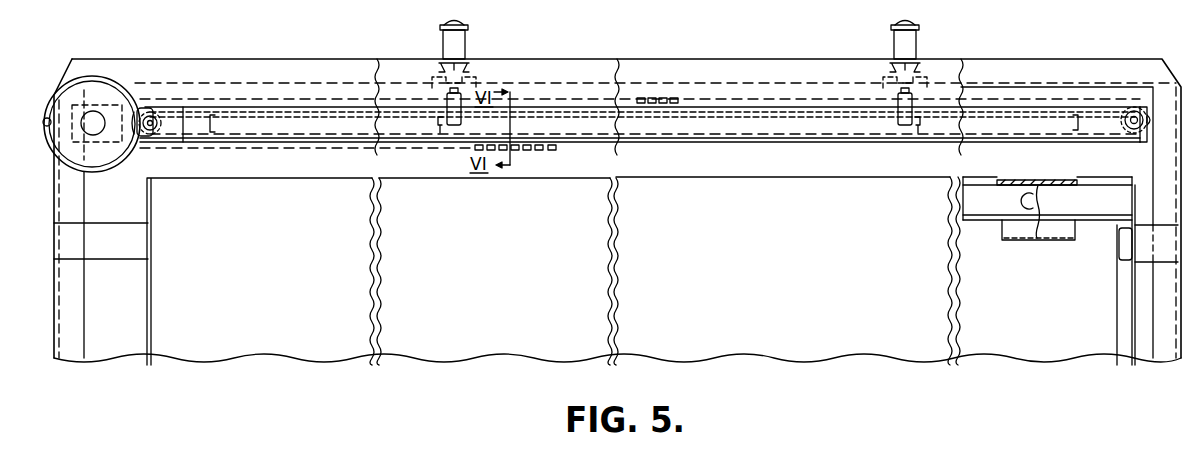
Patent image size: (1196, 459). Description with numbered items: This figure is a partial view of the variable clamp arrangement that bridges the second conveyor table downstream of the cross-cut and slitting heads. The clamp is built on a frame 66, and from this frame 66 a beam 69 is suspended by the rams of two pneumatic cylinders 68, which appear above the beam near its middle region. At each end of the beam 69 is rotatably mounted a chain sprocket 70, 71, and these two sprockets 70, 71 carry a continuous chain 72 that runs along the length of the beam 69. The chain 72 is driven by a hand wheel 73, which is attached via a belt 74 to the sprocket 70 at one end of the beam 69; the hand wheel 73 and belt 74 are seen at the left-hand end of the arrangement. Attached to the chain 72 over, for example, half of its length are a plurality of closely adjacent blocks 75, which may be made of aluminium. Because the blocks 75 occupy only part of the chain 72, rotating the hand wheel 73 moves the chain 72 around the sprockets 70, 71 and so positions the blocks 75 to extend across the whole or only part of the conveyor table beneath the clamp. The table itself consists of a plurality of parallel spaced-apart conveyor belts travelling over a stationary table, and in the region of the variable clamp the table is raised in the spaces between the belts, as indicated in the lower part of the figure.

The frame 66 is at (67, 203).
The pneumatic cylinder 68 is at (458, 43).
The beam 69 is at (750, 125).
The chain sprocket 70 is at (160, 145).
The chain sprocket 71 is at (1122, 133).
The continuous chain 72 is at (185, 118).
The hand wheel 73 is at (67, 147).
The belt 74 is at (113, 140).
The blocks 75 is at (552, 150).